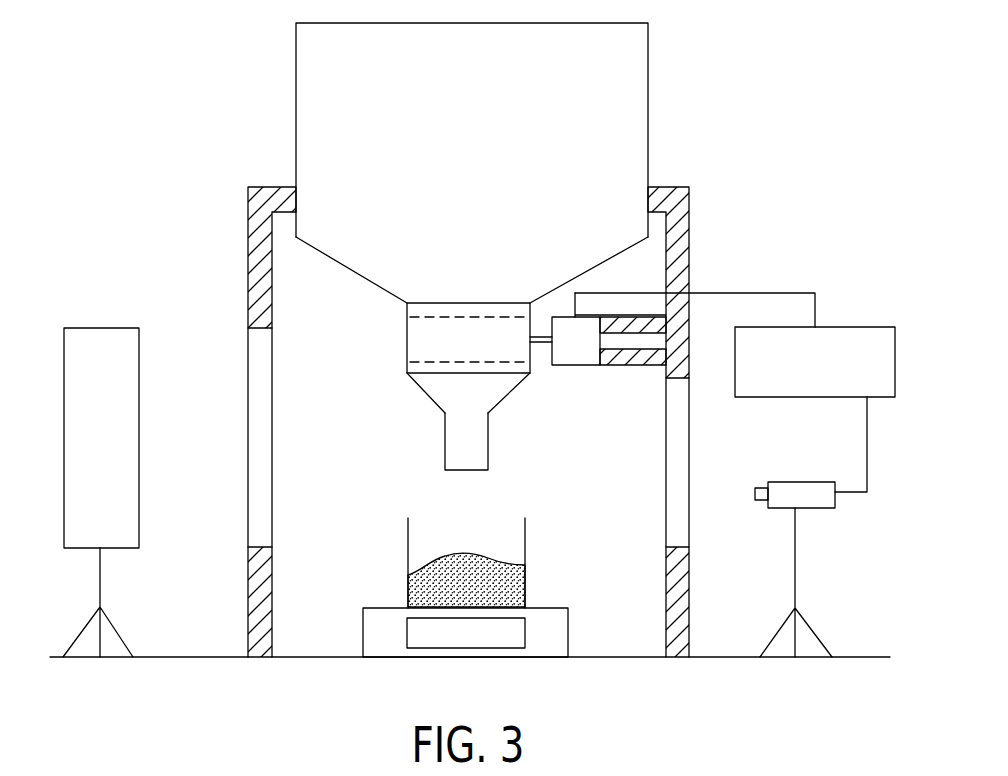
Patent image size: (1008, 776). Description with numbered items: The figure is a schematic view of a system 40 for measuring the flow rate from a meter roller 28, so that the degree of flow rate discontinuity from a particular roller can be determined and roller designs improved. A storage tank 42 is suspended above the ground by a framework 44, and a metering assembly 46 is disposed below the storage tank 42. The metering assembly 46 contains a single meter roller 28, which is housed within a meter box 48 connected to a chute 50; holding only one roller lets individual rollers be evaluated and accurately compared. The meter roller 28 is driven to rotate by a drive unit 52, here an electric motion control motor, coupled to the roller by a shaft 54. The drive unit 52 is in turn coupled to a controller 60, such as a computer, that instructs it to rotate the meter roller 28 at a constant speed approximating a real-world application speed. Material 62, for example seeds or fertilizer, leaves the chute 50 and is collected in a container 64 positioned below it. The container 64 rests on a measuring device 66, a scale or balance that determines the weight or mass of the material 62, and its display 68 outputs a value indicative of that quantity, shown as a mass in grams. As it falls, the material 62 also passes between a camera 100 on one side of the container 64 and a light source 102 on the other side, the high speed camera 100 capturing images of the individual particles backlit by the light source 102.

The system 40 is at (230, 138).
The storage tank 42 is at (648, 135).
The framework 44 is at (246, 424).
The metering assembly 46 is at (507, 294).
The meter box 48 is at (407, 362).
The meter roller 28 is at (444, 317).
The chute 50 is at (445, 440).
The drive unit 52 is at (577, 366).
The shaft 54 is at (541, 345).
The controller 60 is at (812, 399).
The material 62 is at (521, 590).
The container 64 is at (526, 546).
The measuring device 66 is at (570, 634).
The display 68 is at (405, 630).
The camera 100 is at (820, 511).
The light source 102 is at (78, 327).